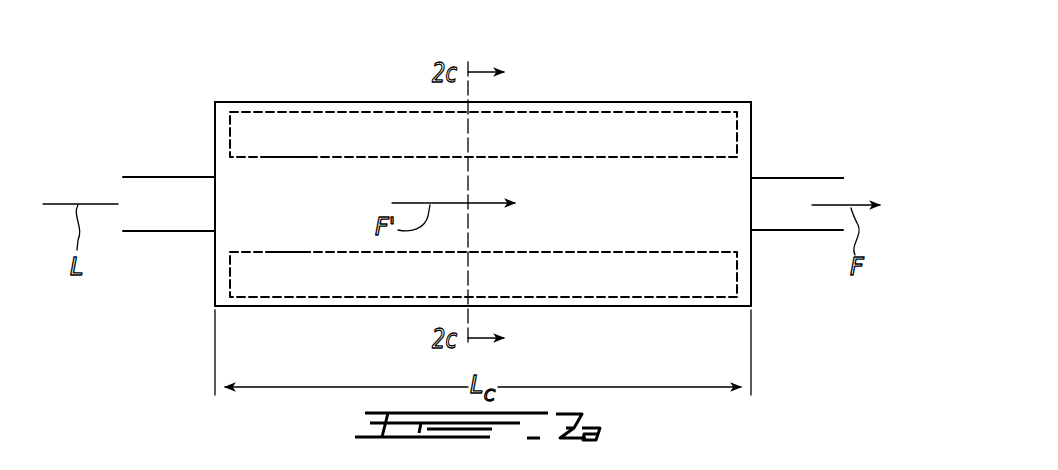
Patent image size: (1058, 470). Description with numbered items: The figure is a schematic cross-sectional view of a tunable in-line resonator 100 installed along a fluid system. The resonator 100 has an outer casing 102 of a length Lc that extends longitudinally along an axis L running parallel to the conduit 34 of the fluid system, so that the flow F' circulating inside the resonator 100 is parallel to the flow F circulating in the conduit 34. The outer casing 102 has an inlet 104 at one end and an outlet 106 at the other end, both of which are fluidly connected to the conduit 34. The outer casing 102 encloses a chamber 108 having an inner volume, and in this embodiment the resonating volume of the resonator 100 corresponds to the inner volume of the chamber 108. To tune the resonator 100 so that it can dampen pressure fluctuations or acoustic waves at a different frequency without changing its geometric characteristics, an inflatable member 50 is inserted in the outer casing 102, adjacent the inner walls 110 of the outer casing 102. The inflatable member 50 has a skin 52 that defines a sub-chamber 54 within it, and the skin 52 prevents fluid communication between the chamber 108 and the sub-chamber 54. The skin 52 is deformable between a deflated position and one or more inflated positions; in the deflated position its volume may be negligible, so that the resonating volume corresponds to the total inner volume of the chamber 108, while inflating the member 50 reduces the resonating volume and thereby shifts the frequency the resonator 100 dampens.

The in-line resonator 100 is at (783, 65).
The outer casing 102 is at (293, 94).
The inlet 104 is at (192, 259).
The outlet 106 is at (770, 164).
The chamber 108 is at (670, 218).
The inner walls 110 is at (240, 102).
The conduit 34 is at (815, 178).
The inflatable member 50 is at (483, 208).
The skin 52 is at (288, 158).
The sub-chamber 54 is at (427, 148).